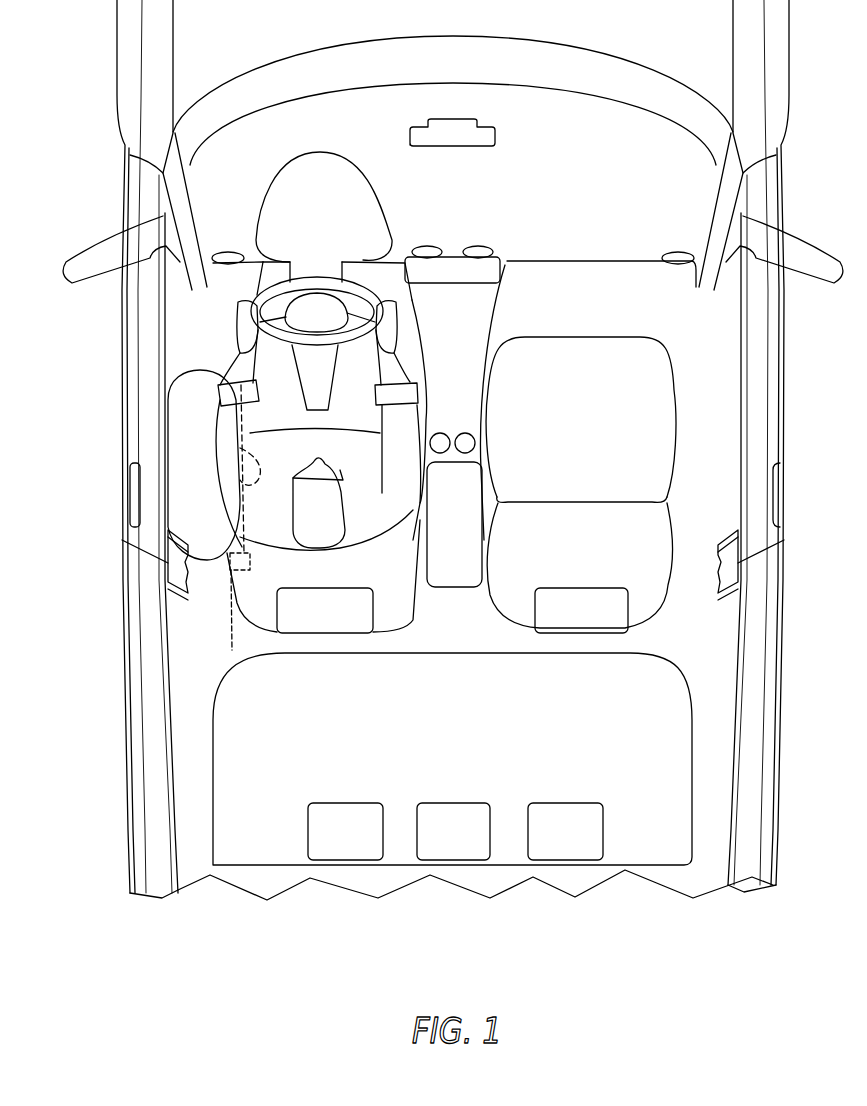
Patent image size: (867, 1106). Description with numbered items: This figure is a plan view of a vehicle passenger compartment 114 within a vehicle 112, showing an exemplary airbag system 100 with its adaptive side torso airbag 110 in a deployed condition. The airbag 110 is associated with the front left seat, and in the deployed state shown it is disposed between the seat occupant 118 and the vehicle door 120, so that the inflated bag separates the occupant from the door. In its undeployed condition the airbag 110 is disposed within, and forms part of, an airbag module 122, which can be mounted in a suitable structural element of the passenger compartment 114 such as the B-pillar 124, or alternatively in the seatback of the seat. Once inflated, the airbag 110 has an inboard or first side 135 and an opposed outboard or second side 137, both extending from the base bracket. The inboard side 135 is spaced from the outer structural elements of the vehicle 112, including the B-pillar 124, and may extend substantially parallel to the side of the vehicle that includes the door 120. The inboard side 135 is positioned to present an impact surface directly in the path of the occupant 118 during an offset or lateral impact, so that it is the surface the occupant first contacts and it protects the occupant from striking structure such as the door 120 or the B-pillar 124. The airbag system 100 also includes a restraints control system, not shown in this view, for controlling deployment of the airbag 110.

The airbag system 100 is at (176, 379).
The adaptive side torso airbag 110 is at (203, 370).
The vehicle 112 is at (125, 142).
The vehicle passenger compartment 114 is at (175, 777).
The seat occupant 118 is at (248, 335).
The vehicle door 120 is at (123, 492).
The airbag module 122 is at (243, 545).
The B-pillar 124 is at (172, 600).
The inboard side 135 is at (240, 448).
The outboard side 137 is at (168, 392).